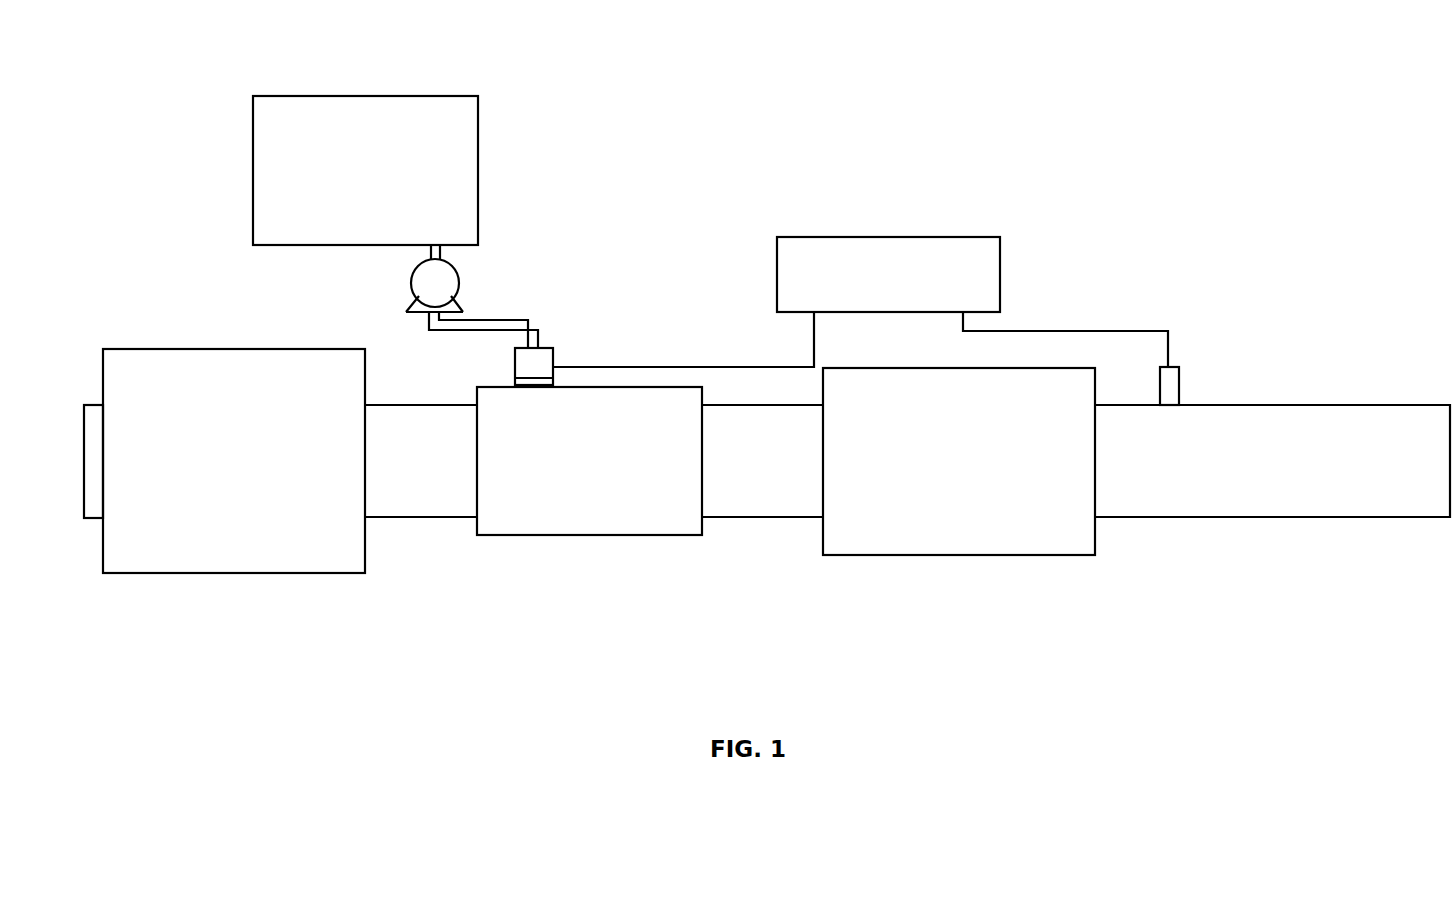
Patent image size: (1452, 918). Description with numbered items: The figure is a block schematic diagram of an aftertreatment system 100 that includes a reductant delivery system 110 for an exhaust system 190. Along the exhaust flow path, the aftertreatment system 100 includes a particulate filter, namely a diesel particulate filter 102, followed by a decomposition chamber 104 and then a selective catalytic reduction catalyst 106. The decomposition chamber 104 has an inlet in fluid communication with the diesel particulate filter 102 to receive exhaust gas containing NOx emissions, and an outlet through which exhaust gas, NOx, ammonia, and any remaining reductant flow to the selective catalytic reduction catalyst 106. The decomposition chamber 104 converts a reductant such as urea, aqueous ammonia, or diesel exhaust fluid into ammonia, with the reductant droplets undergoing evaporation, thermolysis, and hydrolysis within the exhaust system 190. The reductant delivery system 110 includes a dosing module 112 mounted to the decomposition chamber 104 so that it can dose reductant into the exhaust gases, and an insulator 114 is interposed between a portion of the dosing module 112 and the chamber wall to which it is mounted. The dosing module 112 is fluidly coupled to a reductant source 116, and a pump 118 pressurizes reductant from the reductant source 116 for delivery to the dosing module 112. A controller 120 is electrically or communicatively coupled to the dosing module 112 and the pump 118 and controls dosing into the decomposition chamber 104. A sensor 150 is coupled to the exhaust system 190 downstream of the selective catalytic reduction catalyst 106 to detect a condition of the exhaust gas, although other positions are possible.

The aftertreatment system 100 is at (1038, 310).
The diesel particulate filter 102 is at (257, 573).
The decomposition chamber 104 is at (684, 387).
The selective catalytic reduction catalyst 106 is at (938, 555).
The reductant delivery system 110 is at (640, 296).
The dosing module 112 is at (553, 360).
The insulator 114 is at (514, 382).
The reductant source 116 is at (287, 95).
The pump 118 is at (411, 275).
The controller 120 is at (823, 237).
The sensor 150 is at (1200, 378).
The exhaust system 190 is at (456, 627).